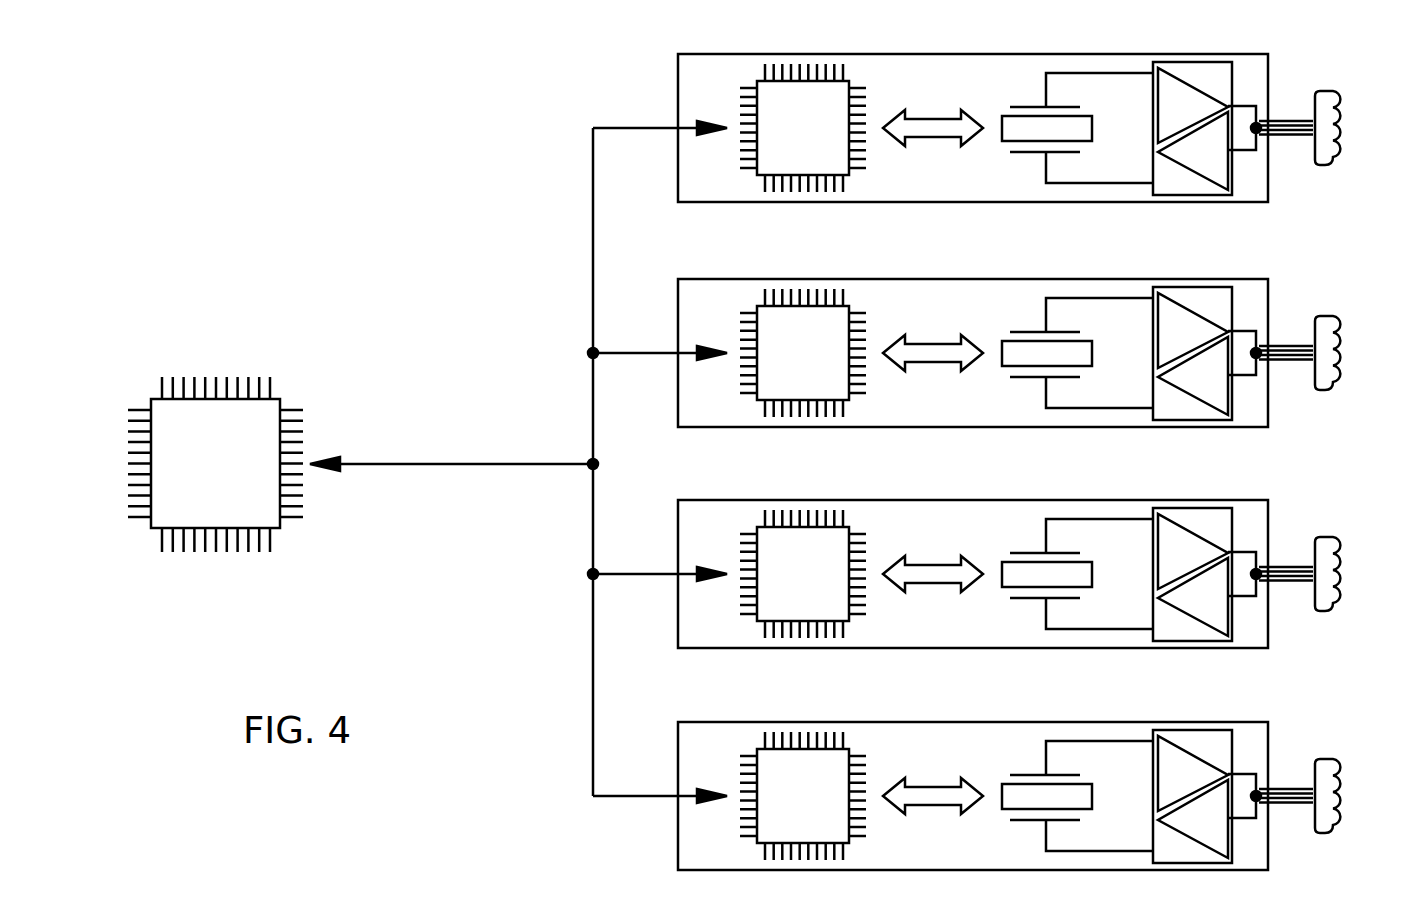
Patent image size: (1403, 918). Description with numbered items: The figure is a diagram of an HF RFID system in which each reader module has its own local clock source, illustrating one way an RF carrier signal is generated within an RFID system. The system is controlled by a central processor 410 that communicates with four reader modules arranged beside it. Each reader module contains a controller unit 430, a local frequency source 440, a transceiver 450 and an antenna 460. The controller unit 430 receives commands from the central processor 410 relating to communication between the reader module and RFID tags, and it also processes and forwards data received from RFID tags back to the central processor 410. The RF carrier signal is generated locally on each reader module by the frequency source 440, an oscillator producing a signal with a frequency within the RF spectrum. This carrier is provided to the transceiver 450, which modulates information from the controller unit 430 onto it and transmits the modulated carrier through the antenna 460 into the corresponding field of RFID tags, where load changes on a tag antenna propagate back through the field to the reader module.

The central processor 410 is at (180, 405).
The controller unit 430 is at (810, 90).
The local frequency source 440 is at (1053, 128).
The transceiver 450 is at (1172, 68).
The antenna 460 is at (1328, 90).